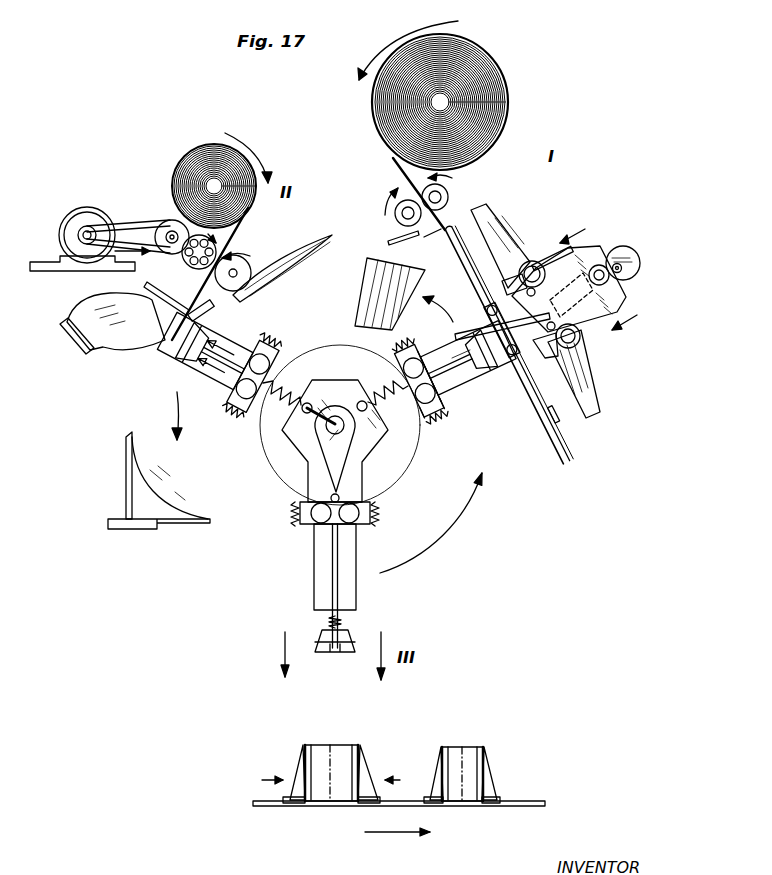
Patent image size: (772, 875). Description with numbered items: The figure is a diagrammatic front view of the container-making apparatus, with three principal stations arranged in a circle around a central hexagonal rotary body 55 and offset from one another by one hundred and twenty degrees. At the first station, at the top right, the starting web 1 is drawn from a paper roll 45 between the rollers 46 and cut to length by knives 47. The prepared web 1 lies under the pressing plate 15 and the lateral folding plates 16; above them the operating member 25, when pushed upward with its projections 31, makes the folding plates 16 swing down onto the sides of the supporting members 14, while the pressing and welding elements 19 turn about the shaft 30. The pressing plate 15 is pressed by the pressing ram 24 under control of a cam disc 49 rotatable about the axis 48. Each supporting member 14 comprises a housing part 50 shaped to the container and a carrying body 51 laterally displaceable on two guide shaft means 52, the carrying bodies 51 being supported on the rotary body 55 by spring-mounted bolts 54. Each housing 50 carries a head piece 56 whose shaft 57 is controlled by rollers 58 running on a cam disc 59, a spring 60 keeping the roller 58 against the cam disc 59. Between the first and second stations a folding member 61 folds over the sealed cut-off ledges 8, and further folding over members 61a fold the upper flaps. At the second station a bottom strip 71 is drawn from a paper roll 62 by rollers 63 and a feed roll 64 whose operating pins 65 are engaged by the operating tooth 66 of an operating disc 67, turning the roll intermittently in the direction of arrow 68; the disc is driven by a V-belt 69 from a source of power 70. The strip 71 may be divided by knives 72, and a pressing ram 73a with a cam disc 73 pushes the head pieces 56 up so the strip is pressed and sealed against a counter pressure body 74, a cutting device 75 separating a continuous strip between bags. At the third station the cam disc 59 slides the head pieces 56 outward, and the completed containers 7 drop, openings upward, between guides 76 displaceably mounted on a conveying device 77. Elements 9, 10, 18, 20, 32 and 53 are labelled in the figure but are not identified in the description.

The starting web 1 is at (446, 246).
The completed container 7 is at (318, 790).
The sealed cut-off ledge 8 is at (333, 748).
The container wall 9 is at (320, 748).
The container wall 10 is at (348, 748).
The supporting member 14 is at (312, 580).
The pressing plate 15 is at (506, 358).
The lateral folding plate 16 is at (465, 268).
The ball joint 18 is at (600, 265).
The pressing and welding element 19 is at (493, 225).
The frame block 20 is at (627, 306).
The pressing ram 24 is at (527, 372).
The operating member 25 is at (590, 326).
The shaft 30 is at (534, 261).
The projection 31 is at (505, 282).
The guide rail 32 is at (556, 262).
The paper roll 45 is at (486, 73).
The roller 46 is at (402, 188).
The knife 47 is at (390, 240).
The axis 48 is at (624, 274).
The cam disc 49 is at (630, 253).
The housing part 50 is at (352, 598).
The carrying body 51 is at (368, 514).
The guide shaft means 52 is at (312, 530).
The stop 53 is at (428, 406).
The bolt 54 is at (364, 378).
The central hexagonal rotary body 55 is at (364, 457).
The head piece 56 is at (318, 652).
The shaft 57 is at (478, 362).
The roller 58 is at (342, 388).
The cam disc 59 is at (296, 462).
The spring 60 is at (412, 432).
The folding member 61 is at (362, 292).
The folding over member 61a is at (320, 245).
The paper roll 62 is at (205, 160).
The roller 63 is at (245, 270).
The feed roll 64 is at (194, 268).
The operating pin 65 is at (186, 257).
The operating tooth 66 is at (165, 224).
The operating disc 67 is at (176, 222).
The arrow 68 is at (228, 236).
The V-belt 69 is at (120, 228).
The source of power 70 is at (68, 230).
The strip 71 is at (214, 292).
The knife 72 is at (207, 320).
The cam disc 73 is at (334, 443).
The pressing ram 73a is at (320, 448).
The counter pressure body 74 is at (162, 352).
The cutting device 75 is at (160, 490).
The guide 76 is at (296, 778).
The conveying device 77 is at (270, 806).